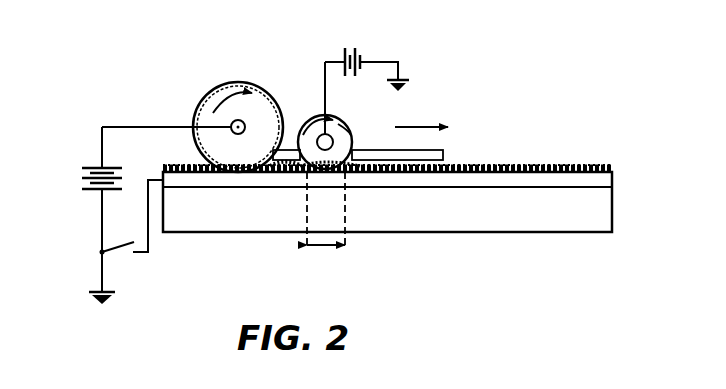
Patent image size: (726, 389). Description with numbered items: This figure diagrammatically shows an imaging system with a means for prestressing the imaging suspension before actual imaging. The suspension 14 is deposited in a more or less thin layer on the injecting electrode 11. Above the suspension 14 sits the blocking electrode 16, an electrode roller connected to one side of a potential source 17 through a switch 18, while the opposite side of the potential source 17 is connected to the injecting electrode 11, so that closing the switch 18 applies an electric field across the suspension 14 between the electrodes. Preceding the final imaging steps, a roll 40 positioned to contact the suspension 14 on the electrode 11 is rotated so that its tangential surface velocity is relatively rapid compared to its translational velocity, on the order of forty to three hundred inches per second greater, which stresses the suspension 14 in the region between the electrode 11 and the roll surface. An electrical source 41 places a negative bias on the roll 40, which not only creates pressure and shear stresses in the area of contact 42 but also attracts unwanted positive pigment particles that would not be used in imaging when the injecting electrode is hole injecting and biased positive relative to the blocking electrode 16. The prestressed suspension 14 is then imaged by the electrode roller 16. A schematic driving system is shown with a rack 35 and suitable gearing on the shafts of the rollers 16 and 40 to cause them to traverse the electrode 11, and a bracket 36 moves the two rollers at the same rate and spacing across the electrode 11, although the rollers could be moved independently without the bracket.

The injecting electrode 11 is at (630, 194).
The suspension 14 is at (597, 166).
The blocking electrode 16 is at (190, 112).
The potential source 17 is at (84, 170).
The switch 18 is at (134, 246).
The rack 35 is at (443, 157).
The bracket 36 is at (290, 128).
The roll 40 is at (350, 130).
The electrical source 41 is at (410, 32).
The area of contact 42 is at (323, 247).